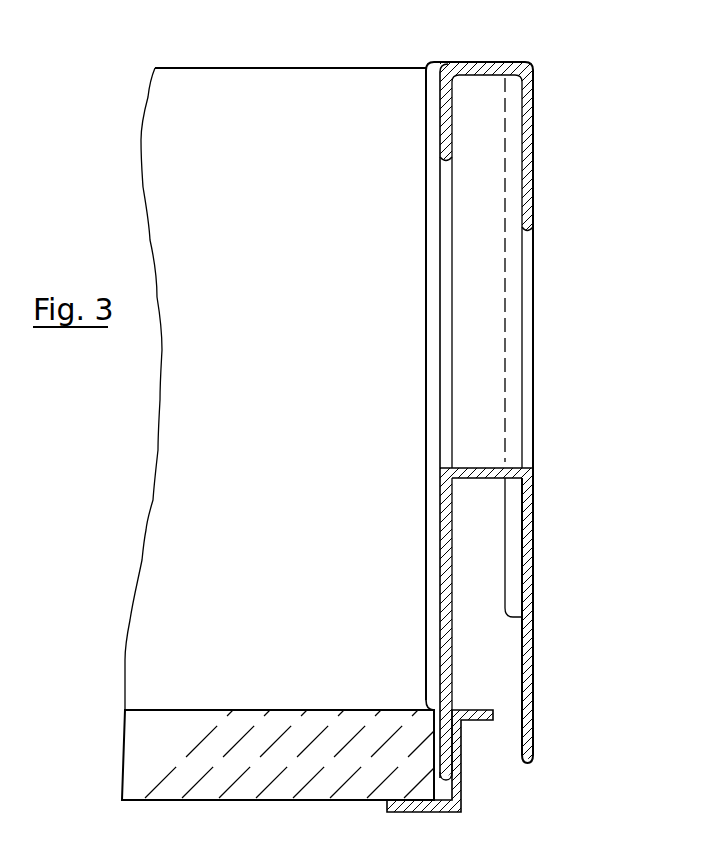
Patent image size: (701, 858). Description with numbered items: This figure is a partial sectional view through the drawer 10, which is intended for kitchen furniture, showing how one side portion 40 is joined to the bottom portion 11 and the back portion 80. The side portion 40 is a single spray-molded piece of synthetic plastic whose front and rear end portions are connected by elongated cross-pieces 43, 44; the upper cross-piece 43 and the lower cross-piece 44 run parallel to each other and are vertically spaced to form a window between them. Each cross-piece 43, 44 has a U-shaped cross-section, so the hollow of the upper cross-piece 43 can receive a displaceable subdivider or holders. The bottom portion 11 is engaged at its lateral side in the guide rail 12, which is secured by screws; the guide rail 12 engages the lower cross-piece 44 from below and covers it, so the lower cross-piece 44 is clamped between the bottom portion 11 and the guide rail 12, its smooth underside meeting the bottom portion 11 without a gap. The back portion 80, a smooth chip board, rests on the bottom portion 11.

The drawer 10 is at (131, 530).
The bottom portion 11 is at (195, 762).
The guide rail 12 is at (472, 720).
The side portion 40 is at (537, 290).
The upper elongated cross-piece 43 is at (516, 149).
The lower elongated cross-piece 44 is at (526, 543).
The back portion 80 is at (286, 329).